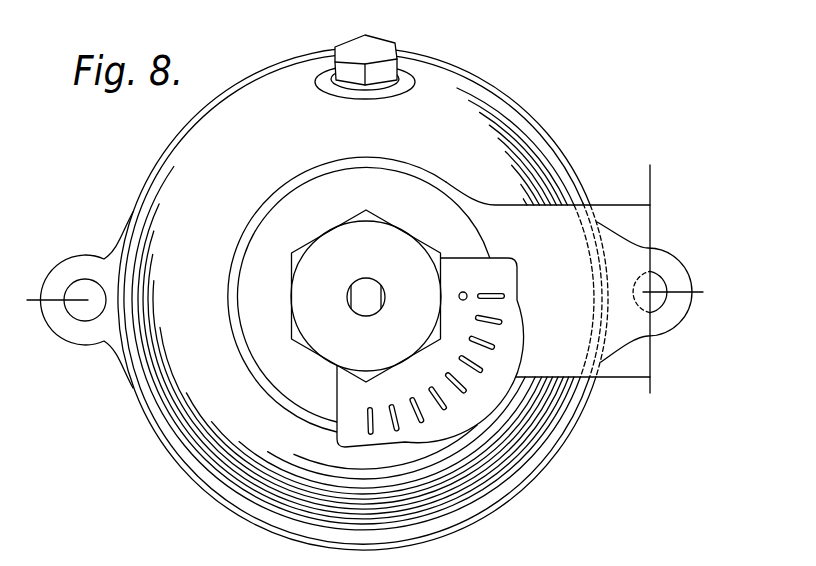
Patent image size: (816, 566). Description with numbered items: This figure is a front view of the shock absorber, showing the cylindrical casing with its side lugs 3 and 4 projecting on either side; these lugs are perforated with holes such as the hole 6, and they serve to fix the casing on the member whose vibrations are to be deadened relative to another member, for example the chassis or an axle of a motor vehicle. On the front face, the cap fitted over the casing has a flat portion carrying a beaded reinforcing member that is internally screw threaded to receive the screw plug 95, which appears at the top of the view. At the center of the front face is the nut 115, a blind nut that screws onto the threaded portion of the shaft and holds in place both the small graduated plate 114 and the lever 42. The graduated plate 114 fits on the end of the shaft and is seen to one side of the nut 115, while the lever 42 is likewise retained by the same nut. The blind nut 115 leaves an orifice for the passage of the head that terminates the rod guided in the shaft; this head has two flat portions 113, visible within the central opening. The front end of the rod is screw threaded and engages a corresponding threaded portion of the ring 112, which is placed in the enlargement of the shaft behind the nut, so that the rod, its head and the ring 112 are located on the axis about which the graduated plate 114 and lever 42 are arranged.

The screw plug 95 is at (372, 50).
The lever 42 is at (359, 294).
The nut 115 is at (366, 296).
The flat portions 113 is at (352, 296).
The ring 112 is at (366, 303).
The graduated plate 114 is at (430, 352).
The side lug 4 is at (58, 270).
The side lug 3 is at (668, 262).
The hole 6 is at (87, 312).